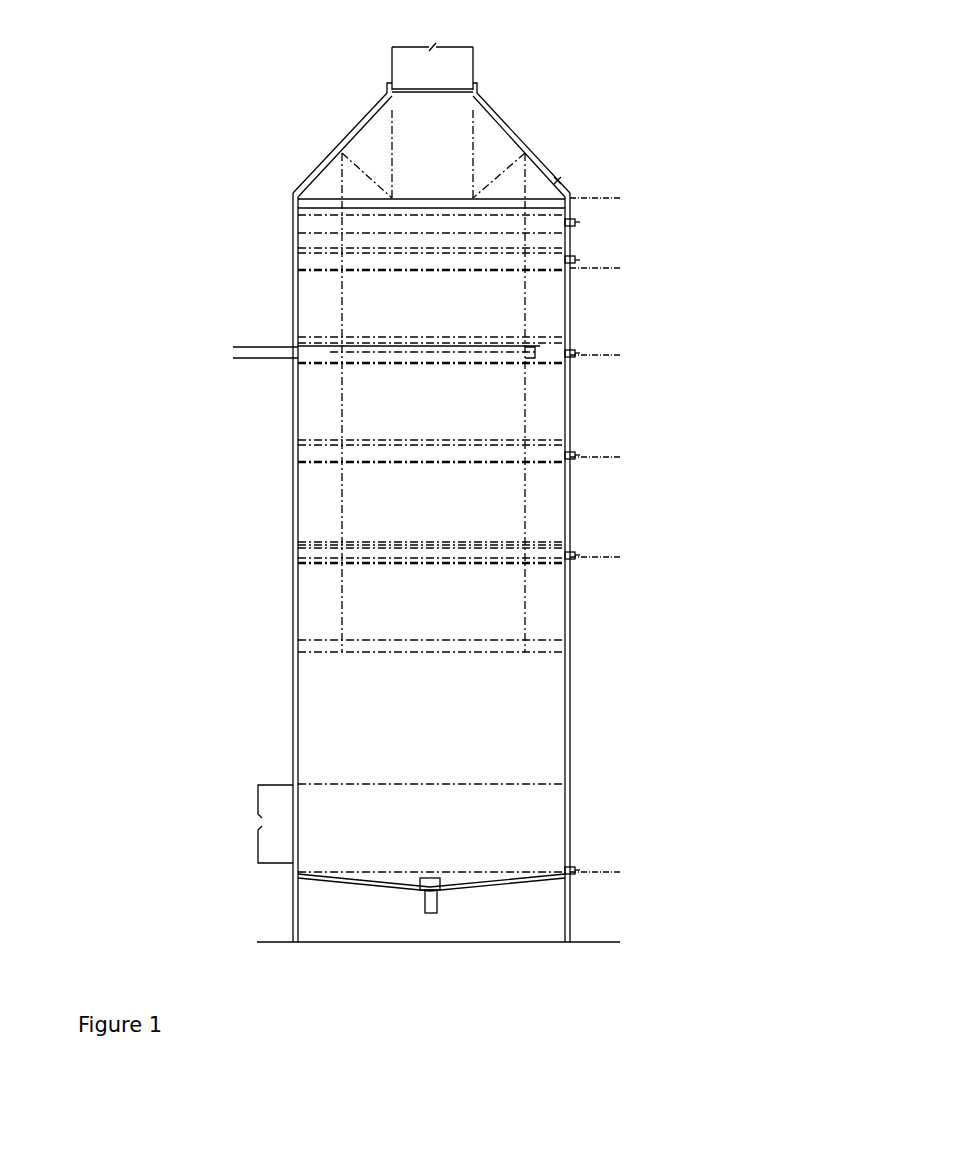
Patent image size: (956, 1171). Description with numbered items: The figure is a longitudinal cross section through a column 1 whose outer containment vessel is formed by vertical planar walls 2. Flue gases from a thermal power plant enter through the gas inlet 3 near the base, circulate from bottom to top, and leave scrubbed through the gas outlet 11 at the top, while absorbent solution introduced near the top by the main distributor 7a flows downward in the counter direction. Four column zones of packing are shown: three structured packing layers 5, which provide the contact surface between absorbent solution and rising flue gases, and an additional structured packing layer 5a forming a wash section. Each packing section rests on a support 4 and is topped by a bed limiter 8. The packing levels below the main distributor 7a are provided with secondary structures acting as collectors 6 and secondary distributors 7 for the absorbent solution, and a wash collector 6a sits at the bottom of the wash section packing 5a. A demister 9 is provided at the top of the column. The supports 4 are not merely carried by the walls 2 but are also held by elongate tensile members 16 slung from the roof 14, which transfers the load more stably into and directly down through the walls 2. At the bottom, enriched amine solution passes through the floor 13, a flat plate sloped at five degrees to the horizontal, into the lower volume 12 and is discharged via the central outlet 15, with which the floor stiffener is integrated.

The column 1 is at (716, 220).
The vertical planar walls 2 is at (292, 695).
The gas inlet 3 is at (322, 825).
The support 4 is at (335, 342).
The structured packing layers 5 is at (563, 393).
The structured packing layer for wash section 5a is at (545, 313).
The collectors 6 is at (295, 546).
The wash collector 6a is at (332, 345).
The secondary distributors 7 is at (295, 562).
The main distributor 7a is at (330, 352).
The bed limiter 8 is at (315, 363).
The demister 9 is at (393, 238).
The gas outlet 11 is at (417, 62).
The lower volume 12 is at (363, 924).
The floor 13 is at (458, 885).
The roof 14 is at (367, 110).
The outlet 15 is at (438, 902).
The elongate tensile members 16 is at (347, 183).